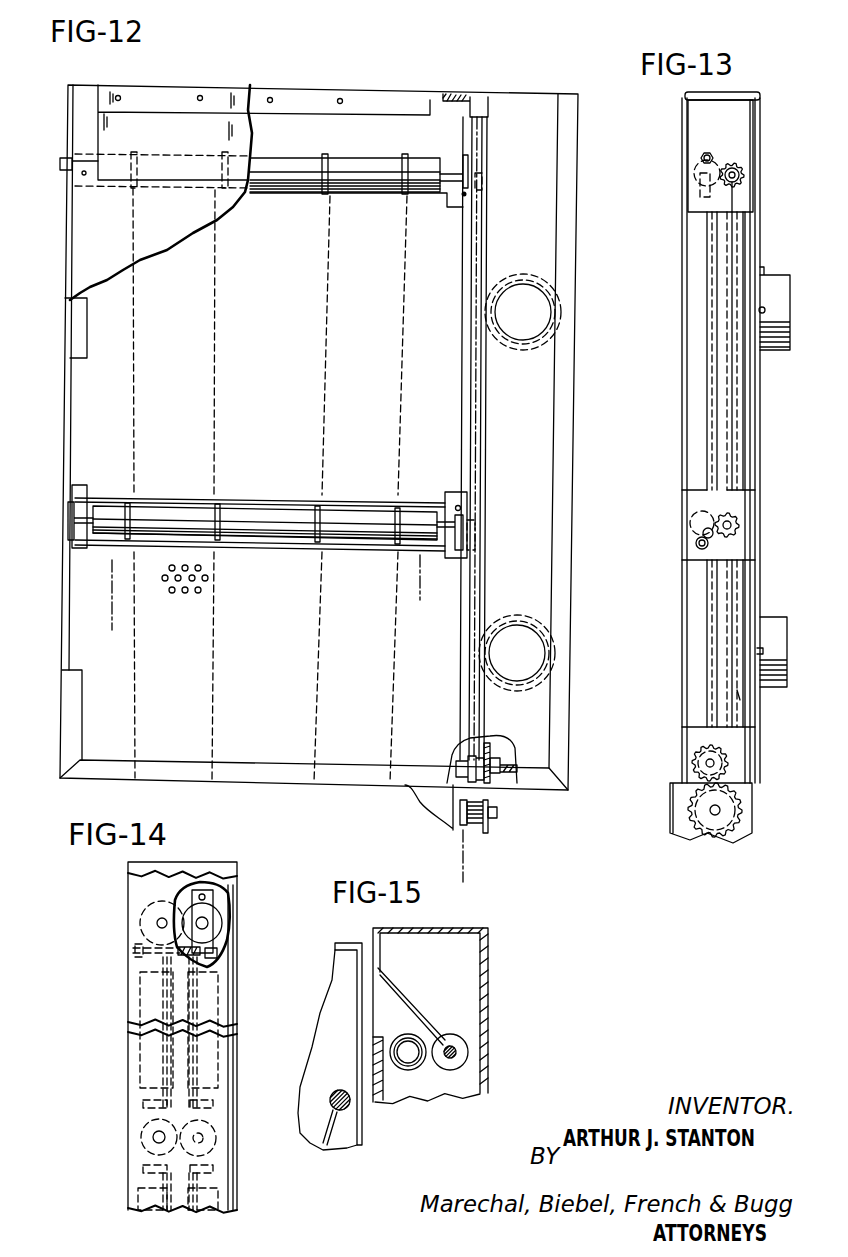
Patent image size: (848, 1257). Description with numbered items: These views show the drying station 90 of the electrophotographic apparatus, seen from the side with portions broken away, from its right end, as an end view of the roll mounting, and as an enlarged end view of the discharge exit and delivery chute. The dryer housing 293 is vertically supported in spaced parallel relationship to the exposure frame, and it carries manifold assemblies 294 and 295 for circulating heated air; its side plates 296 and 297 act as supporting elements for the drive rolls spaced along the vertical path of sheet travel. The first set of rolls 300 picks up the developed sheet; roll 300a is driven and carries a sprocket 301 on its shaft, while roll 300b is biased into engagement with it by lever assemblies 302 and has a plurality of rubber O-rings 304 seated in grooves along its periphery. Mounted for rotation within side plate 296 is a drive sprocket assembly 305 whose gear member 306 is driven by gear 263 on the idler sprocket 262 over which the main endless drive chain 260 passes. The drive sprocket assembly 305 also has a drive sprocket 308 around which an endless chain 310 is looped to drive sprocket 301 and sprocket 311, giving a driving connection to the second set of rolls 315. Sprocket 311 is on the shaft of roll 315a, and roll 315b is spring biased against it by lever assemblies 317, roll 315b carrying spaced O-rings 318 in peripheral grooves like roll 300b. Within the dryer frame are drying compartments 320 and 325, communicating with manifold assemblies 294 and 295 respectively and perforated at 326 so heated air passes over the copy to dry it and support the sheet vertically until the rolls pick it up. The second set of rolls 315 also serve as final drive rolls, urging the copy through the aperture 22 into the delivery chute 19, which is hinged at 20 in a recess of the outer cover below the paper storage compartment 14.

In FIG. 12, the compartment 14 is at (56, 283).
In FIG. 12, the drying station 90 is at (319, 83).
In FIG. 13, the drying station 90 is at (678, 136).
In FIG. 14, the drying station 90 is at (122, 933).
In FIG. 15, the drying station 90 is at (505, 979).
In FIG. 12, the O-rings 318 is at (402, 156).
In FIG. 12, the roll 315b is at (360, 184).
In FIG. 13, the roll 315b is at (697, 177).
In FIG. 15, the roll 315b is at (430, 1076).
In FIG. 12, the lever assemblies 317 is at (471, 167).
In FIG. 14, the lever assemblies 317 is at (205, 905).
In FIG. 12, the sprocket 311 is at (480, 186).
In FIG. 13, the sprocket 311 is at (747, 180).
In FIG. 12, the manifold assembly 294 is at (545, 293).
In FIG. 13, the manifold assembly 294 is at (781, 275).
In FIG. 12, the drying compartment 320 is at (285, 340).
In FIG. 13, the drying compartment 320 is at (746, 363).
In FIG. 14, the drying compartment 320 is at (130, 995).
In FIG. 12, the side plate 297 is at (65, 432).
In FIG. 12, the side plate 296 is at (465, 412).
In FIG. 12, the housing 293 is at (573, 420).
In FIG. 12, the rubber O-rings 304 is at (218, 506).
In FIG. 12, the rolls 300 is at (299, 498).
In FIG. 14, the rolls 300 is at (135, 1135).
In FIG. 12, the lever assemblies 302 is at (72, 520).
In FIG. 12, the roll 300b is at (260, 529).
In FIG. 13, the roll 300b is at (689, 522).
In FIG. 12, the endless chain 310 is at (476, 584).
In FIG. 13, the endless chain 310 is at (741, 701).
In FIG. 12, the manifold assembly 295 is at (547, 656).
In FIG. 13, the manifold assembly 295 is at (773, 617).
In FIG. 12, the drying compartment 325 is at (280, 645).
In FIG. 13, the drying compartment 325 is at (688, 670).
In FIG. 14, the drying compartment 325 is at (138, 1197).
In FIG. 12, the perforations 326 is at (180, 600).
In FIG. 12, the drive sprocket assembly 305 is at (490, 741).
In FIG. 12, the drive sprocket 308 is at (457, 746).
In FIG. 13, the drive sprocket 308 is at (706, 751).
In FIG. 12, the gear member 306 is at (497, 788).
In FIG. 13, the gear member 306 is at (690, 776).
In FIG. 12, the idler sprocket 262 is at (460, 810).
In FIG. 12, the gear 263 is at (497, 828).
In FIG. 13, the gear 263 is at (700, 821).
In FIG. 12, the endless drive chain 260 is at (467, 863).
In FIG. 13, the rolls 315 is at (723, 155).
In FIG. 14, the rolls 315 is at (224, 921).
In FIG. 13, the roll 315a is at (743, 165).
In FIG. 15, the roll 315a is at (468, 1052).
In FIG. 13, the sprocket 301 is at (731, 513).
In FIG. 13, the roll 300a is at (738, 532).
In FIG. 15, the aperture 22 is at (362, 1006).
In FIG. 15, the hinge 20 is at (332, 1096).
In FIG. 15, the delivery chute 19 is at (320, 1147).